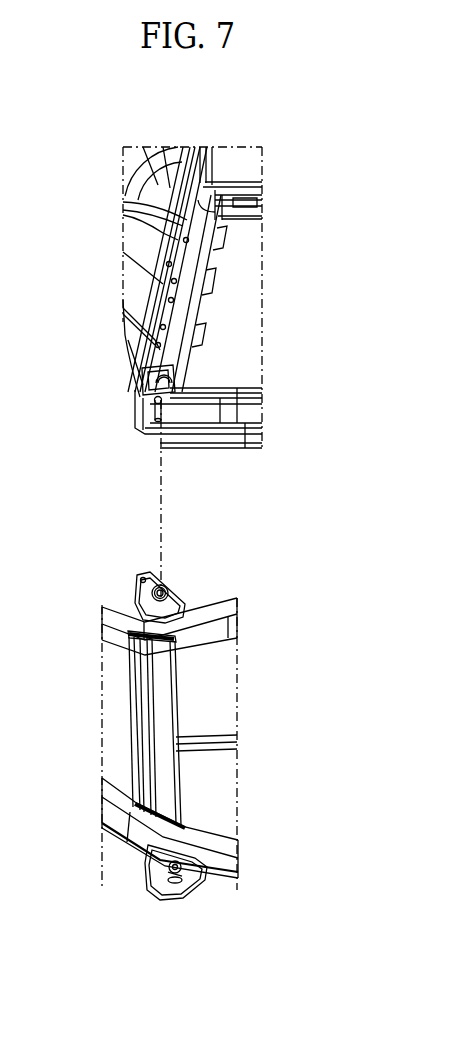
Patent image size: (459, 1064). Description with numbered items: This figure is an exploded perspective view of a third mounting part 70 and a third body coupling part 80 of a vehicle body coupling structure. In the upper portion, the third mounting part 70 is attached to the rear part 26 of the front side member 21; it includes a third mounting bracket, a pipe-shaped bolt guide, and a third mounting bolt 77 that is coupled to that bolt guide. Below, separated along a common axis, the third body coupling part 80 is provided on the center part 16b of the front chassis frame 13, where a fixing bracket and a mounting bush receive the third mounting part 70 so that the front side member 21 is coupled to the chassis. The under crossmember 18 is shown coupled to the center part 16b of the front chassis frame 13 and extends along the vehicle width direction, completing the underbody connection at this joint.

The front side member 21 is at (112, 343).
The rear part 26 is at (140, 380).
The third mounting part 70 is at (141, 412).
The third mounting bolt 77 is at (163, 406).
The third body coupling part 80 is at (188, 582).
The center part 16b is at (113, 642).
The under crossmember 18 is at (192, 706).
The front chassis frame 13 is at (122, 862).